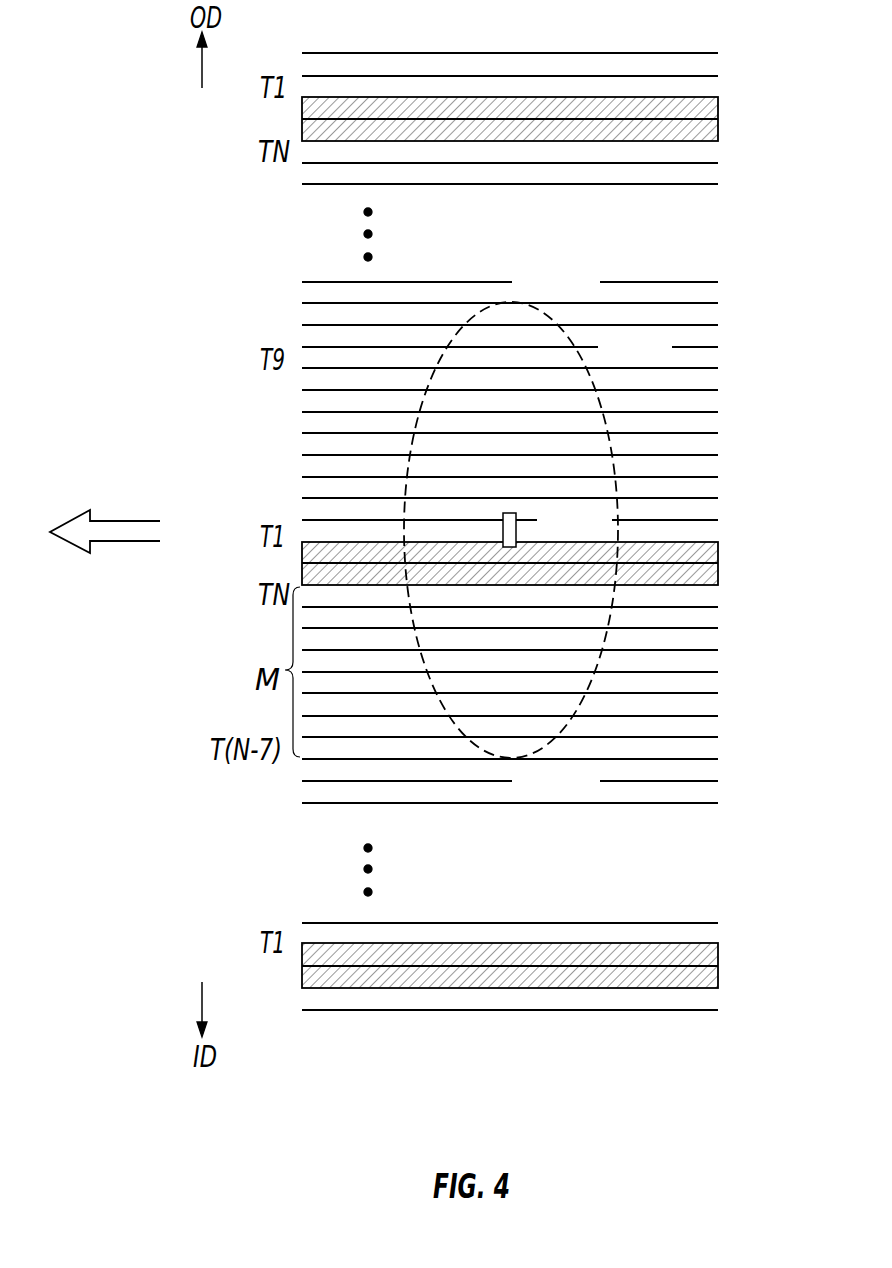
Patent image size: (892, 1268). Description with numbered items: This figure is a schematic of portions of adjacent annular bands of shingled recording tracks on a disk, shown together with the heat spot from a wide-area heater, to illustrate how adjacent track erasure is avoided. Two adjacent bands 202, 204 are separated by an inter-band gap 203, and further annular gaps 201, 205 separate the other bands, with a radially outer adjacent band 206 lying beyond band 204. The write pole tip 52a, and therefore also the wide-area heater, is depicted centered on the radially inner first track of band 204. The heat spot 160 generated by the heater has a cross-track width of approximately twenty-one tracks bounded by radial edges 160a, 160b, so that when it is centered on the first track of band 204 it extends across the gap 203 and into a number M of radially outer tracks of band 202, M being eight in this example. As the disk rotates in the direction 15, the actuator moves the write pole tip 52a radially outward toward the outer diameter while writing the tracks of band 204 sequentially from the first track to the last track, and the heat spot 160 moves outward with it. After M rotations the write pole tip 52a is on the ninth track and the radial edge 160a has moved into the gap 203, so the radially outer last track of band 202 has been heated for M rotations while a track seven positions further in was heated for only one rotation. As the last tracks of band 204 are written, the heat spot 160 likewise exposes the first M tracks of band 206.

The direction of disk rotation 15 is at (108, 521).
The write pole tip 52a is at (516, 528).
The heat spot 160 is at (578, 358).
The radial edge of heat spot 160a is at (512, 760).
The radial edge of heat spot 160b is at (512, 304).
The inter-band gap 201 is at (725, 943).
The annular band 202 is at (725, 585).
The inter-band gap 203 is at (725, 542).
The annular band 204 is at (725, 141).
The fifth layer (hatched) 205 is at (725, 97).
The annular band 206 is at (725, 13).